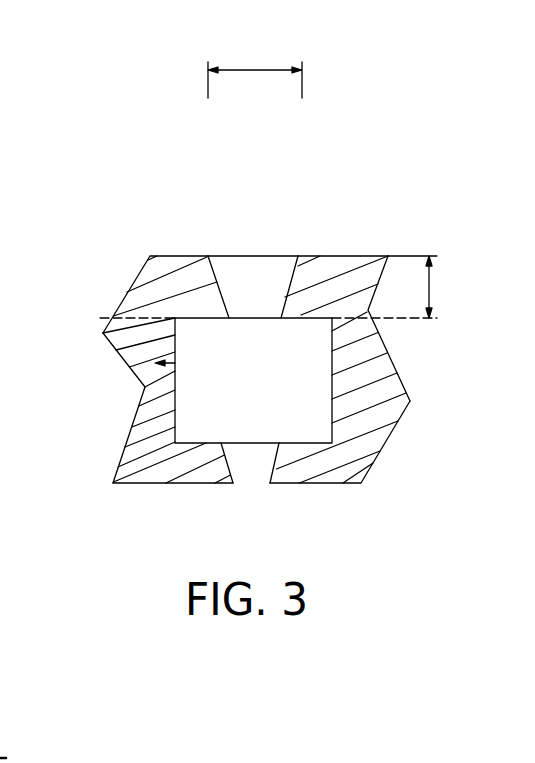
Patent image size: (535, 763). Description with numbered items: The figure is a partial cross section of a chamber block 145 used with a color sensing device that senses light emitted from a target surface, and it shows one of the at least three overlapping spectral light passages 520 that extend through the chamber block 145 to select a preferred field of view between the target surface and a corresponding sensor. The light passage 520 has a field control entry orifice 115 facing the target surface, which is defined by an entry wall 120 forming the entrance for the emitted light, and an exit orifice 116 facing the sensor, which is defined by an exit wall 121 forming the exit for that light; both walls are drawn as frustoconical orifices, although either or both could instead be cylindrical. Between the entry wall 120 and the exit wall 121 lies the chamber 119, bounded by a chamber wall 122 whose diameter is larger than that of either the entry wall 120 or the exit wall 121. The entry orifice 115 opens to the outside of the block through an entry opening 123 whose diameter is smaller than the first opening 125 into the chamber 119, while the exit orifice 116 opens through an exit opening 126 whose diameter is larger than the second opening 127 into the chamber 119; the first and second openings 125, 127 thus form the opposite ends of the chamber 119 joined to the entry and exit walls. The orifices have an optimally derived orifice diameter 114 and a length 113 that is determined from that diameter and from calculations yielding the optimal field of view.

The length 113 is at (430, 287).
The orifice diameter 114 is at (258, 69).
The field control entry orifice 115 is at (261, 490).
The exit orifice 116 is at (262, 246).
The chamber 119 is at (150, 363).
The entry wall 120 is at (231, 468).
The exit wall 121 is at (219, 287).
The chamber wall 122 is at (183, 413).
The entry opening 123 is at (247, 483).
The first opening 125 is at (252, 443).
The exit opening 126 is at (298, 255).
The second opening 127 is at (253, 319).
The chamber block 145 is at (350, 255).
The spectral light passage 520 is at (287, 246).